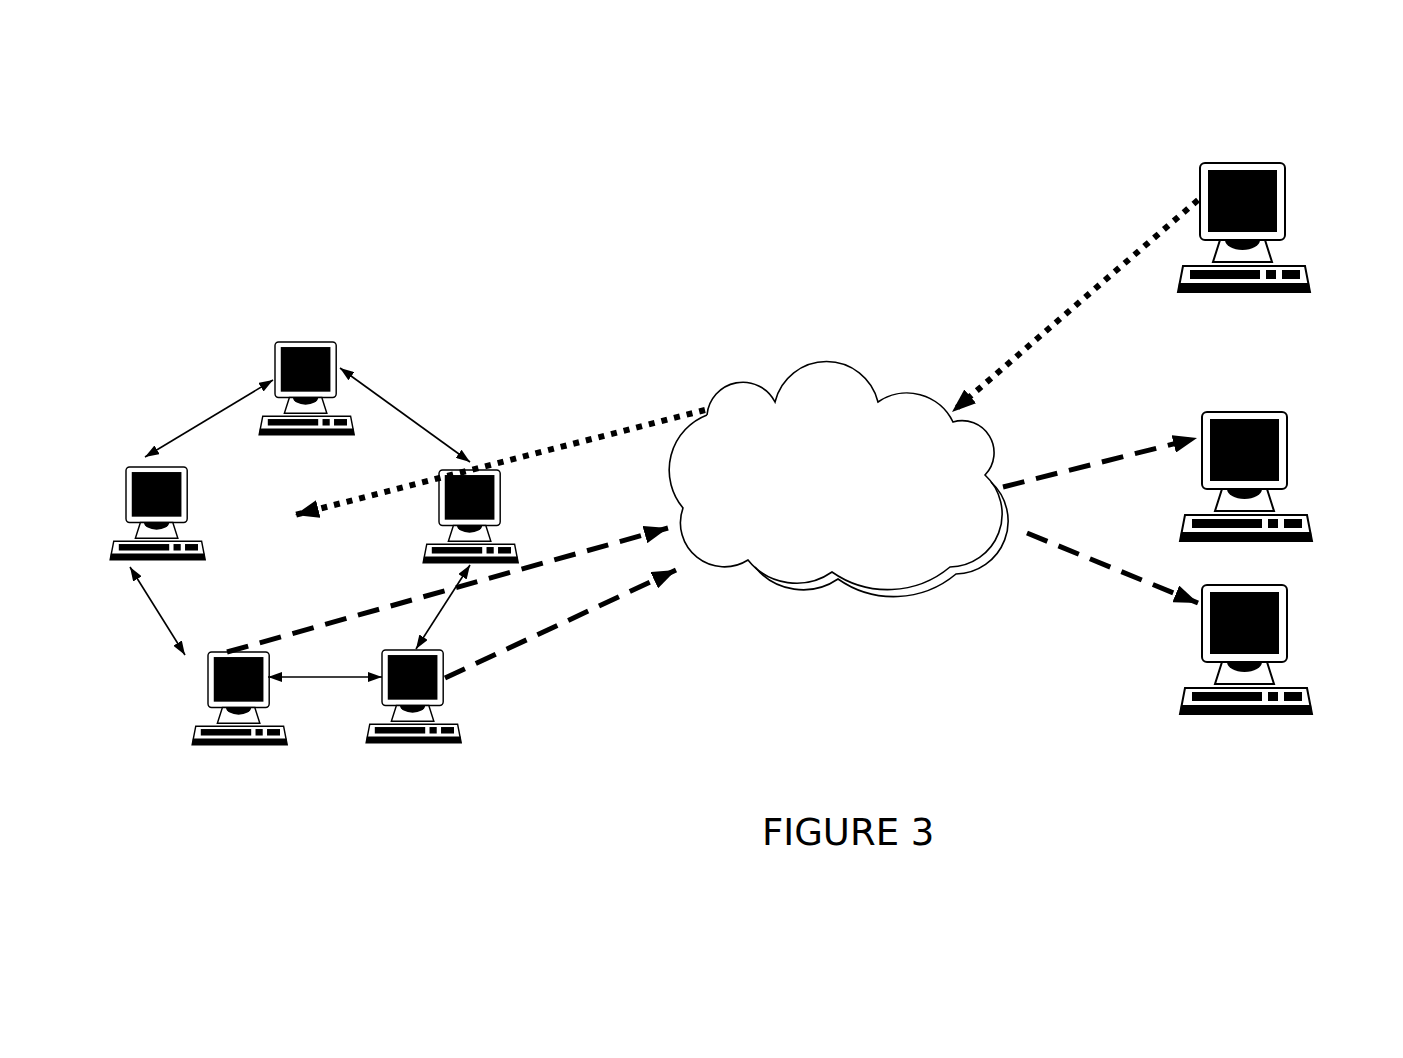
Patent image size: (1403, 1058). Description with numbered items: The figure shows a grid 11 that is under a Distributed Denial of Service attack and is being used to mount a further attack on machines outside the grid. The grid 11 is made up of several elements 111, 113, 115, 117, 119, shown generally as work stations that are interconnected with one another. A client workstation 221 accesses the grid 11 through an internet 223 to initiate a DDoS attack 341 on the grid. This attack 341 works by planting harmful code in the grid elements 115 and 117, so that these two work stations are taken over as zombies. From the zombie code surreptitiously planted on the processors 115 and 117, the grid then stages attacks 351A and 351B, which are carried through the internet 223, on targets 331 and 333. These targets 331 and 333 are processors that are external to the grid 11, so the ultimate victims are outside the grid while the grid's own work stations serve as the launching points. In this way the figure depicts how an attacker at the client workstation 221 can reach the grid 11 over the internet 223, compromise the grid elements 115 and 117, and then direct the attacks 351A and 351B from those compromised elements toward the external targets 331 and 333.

The grid 11 is at (275, 268).
The grid element 111 is at (338, 353).
The grid element 113 is at (512, 513).
The grid element 115 is at (448, 688).
The grid element 117 is at (203, 703).
The grid element 119 is at (182, 502).
The client workstation 221 is at (1197, 188).
The internet 223 is at (853, 375).
The target 331 is at (1295, 460).
The target 333 is at (1283, 647).
The DDoS attack 341 is at (1062, 305).
The attack 351A is at (637, 585).
The attack 351B is at (1042, 535).